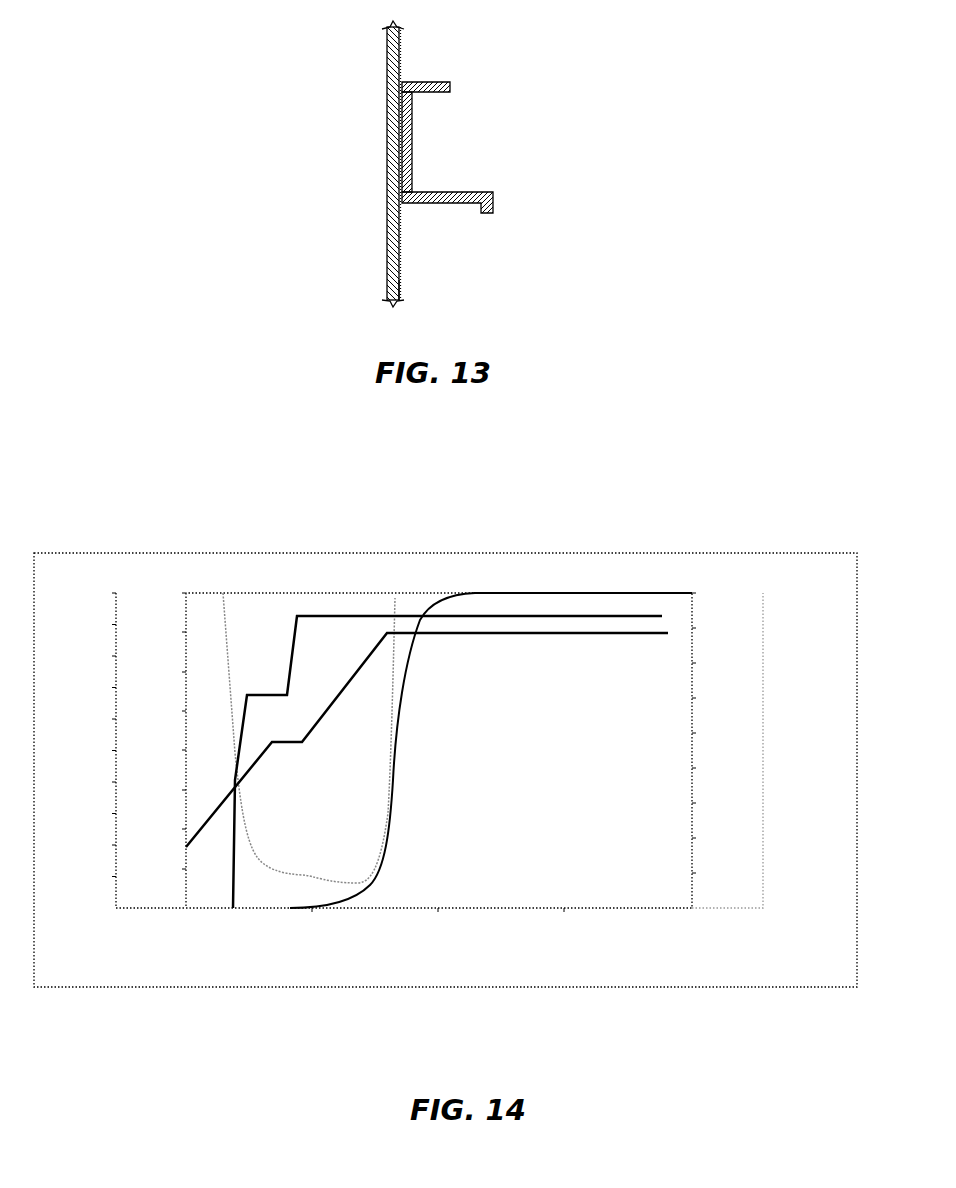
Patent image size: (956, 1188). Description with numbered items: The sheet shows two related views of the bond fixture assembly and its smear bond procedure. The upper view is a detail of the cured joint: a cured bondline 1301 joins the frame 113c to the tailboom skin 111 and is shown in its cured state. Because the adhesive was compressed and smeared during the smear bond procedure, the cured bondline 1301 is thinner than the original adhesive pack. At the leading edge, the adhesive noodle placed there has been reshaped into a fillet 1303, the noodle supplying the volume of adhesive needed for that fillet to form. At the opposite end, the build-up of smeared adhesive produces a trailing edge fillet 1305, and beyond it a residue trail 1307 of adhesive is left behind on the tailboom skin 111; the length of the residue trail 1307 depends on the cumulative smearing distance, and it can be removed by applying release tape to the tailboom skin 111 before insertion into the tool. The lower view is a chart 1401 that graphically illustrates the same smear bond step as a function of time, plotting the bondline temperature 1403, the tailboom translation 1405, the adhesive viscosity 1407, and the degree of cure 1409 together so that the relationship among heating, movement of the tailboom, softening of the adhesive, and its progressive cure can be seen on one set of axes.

In FIG. 13, the tailboom skin 111 is at (387, 115).
In FIG. 13, the frame 113c is at (405, 135).
In FIG. 13, the cured bondline 1301 is at (424, 240).
In FIG. 13, the fillet 1303 is at (400, 77).
In FIG. 13, the trailing edge fillet 1305 is at (405, 210).
In FIG. 13, the residue trail 1307 is at (405, 288).
In FIG. 14, the chart 1401 is at (148, 522).
In FIG. 14, the bondline temperature 1403 is at (207, 813).
In FIG. 14, the tailboom translation 1405 is at (233, 873).
In FIG. 14, the adhesive viscosity 1407 is at (337, 883).
In FIG. 14, the degree of cure 1409 is at (360, 890).